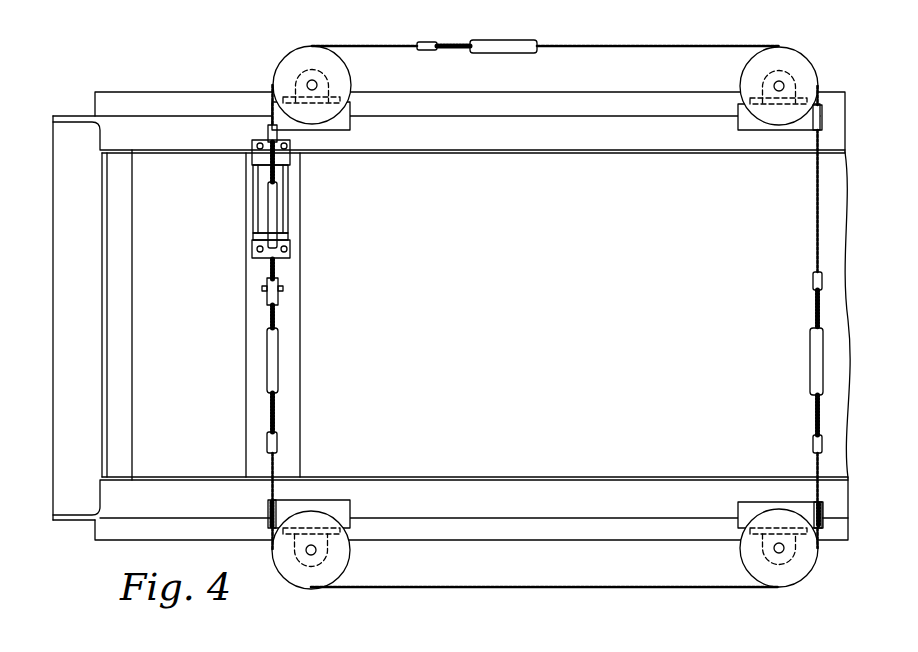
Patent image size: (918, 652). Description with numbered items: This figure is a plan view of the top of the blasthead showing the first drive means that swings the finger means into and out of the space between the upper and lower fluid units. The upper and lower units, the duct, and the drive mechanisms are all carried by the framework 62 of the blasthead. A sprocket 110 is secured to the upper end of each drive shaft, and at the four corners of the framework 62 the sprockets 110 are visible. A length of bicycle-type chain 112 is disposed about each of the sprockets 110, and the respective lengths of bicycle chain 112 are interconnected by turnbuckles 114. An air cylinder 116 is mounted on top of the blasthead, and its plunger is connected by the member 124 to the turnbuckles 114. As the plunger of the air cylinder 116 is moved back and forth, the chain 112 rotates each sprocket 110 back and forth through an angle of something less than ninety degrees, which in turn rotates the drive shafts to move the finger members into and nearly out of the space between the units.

The framework 62 is at (212, 126).
The sprocket 110 is at (332, 78).
The bicycle-type chain 112 is at (548, 585).
The turnbuckle 114 is at (512, 47).
The air cylinder 116 is at (288, 193).
The member 124 is at (275, 300).